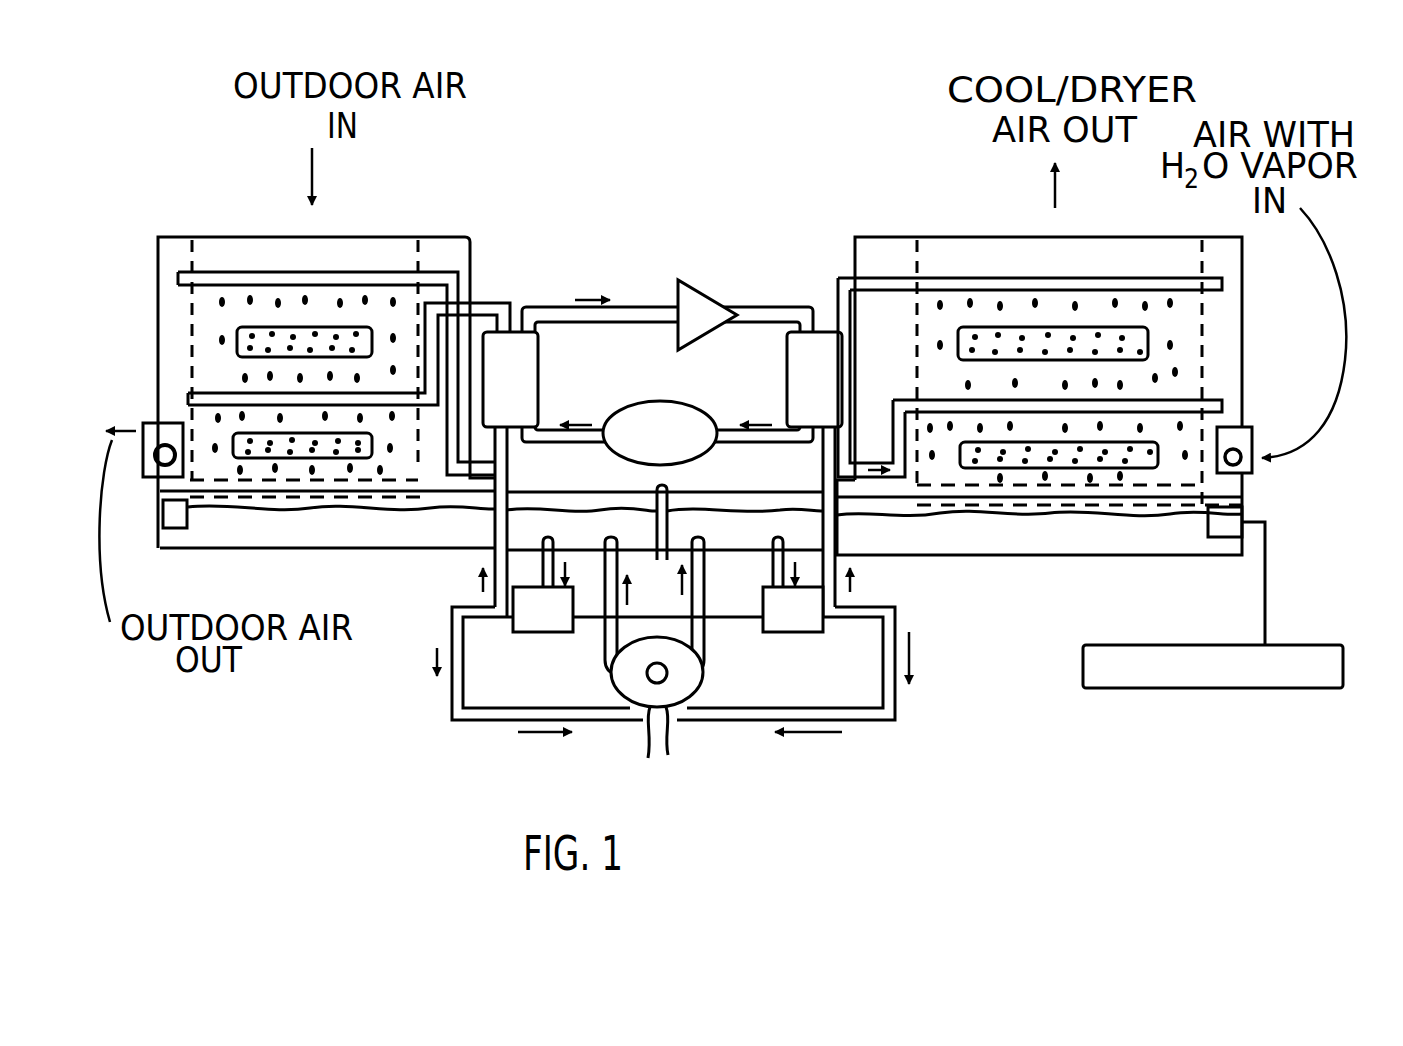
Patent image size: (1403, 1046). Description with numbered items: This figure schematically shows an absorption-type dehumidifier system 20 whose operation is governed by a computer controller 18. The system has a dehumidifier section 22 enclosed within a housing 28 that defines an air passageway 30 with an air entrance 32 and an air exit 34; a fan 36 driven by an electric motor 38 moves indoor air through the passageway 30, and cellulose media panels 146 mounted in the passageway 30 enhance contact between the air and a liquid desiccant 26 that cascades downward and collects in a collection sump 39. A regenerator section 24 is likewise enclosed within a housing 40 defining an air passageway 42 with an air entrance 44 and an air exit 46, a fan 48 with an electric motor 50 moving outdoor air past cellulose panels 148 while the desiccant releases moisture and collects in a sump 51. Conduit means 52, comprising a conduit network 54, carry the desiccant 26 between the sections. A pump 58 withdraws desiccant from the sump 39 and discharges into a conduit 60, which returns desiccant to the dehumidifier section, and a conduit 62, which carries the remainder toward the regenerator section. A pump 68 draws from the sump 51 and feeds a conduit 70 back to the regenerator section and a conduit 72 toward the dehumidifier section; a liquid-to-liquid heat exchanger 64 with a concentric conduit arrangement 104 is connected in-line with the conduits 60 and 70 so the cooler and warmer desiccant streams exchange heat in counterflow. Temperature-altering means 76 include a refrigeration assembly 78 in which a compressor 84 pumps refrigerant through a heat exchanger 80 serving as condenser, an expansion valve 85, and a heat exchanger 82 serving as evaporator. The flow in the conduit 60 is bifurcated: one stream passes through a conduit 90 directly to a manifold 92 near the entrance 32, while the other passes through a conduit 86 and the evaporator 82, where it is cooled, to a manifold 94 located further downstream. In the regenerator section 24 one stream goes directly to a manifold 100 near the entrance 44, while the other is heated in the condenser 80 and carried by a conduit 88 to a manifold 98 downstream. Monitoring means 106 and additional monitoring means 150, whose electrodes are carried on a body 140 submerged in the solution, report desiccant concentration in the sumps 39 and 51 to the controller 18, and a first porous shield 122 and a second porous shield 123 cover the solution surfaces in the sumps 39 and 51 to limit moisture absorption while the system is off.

The computer controller 18 is at (1247, 688).
The absorption-type dehumidifier system 20 is at (792, 108).
The dehumidifier section 22 is at (1245, 255).
The regenerator section 24 is at (158, 288).
The liquid desiccant 26 is at (290, 543).
The housing 28 is at (1245, 293).
The air passageway 30 is at (1195, 330).
The air entrance 32 is at (1247, 425).
The air exit 34 is at (927, 240).
The fan 36 is at (1247, 473).
The electric motor 38 is at (1247, 470).
The collection sump 39 is at (1147, 545).
The housing 40 is at (178, 282).
The air passageway 42 is at (203, 332).
The air entrance 44 is at (405, 238).
The air exit 46 is at (145, 420).
The fan 48 is at (160, 515).
The electric motor 50 is at (153, 465).
The collection sump 51 is at (300, 549).
The conduit means 52 is at (374, 724).
The conduit network 54 is at (896, 724).
The pump 58 is at (805, 632).
The conduit 60 is at (880, 568).
The conduit 62 is at (605, 625).
The heat exchanger 64 is at (668, 745).
The pump 68 is at (540, 632).
The conduit 70 is at (493, 598).
The conduit 72 is at (452, 618).
The temperature-altering means 76 is at (688, 222).
The refrigeration assembly 78 is at (617, 275).
The heat exchanger 80 is at (540, 360).
The heat exchanger 82 is at (787, 360).
The compressor 84 is at (655, 400).
The expansion valve 85 is at (686, 302).
The conduit 86 is at (838, 286).
The conduit 88 is at (485, 303).
The conduit 90 is at (897, 500).
The manifold 92 is at (1195, 400).
The manifold 94 is at (1192, 278).
The manifold 98 is at (212, 396).
The manifold 100 is at (213, 270).
The concentric conduit arrangement 104 is at (648, 740).
The monitoring means 106 is at (1338, 586).
The first porous shield 122 is at (1070, 503).
The second porous shield 123 is at (353, 500).
The body 140 is at (1213, 537).
The cellulose media panels 146 is at (1058, 442).
The cellulose panels 148 is at (257, 330).
The additional monitoring means 150 is at (148, 644).